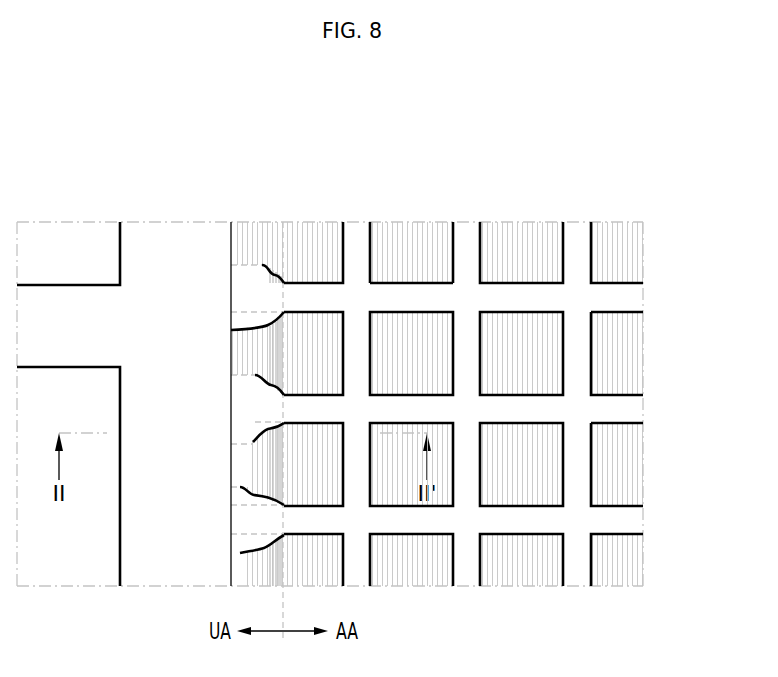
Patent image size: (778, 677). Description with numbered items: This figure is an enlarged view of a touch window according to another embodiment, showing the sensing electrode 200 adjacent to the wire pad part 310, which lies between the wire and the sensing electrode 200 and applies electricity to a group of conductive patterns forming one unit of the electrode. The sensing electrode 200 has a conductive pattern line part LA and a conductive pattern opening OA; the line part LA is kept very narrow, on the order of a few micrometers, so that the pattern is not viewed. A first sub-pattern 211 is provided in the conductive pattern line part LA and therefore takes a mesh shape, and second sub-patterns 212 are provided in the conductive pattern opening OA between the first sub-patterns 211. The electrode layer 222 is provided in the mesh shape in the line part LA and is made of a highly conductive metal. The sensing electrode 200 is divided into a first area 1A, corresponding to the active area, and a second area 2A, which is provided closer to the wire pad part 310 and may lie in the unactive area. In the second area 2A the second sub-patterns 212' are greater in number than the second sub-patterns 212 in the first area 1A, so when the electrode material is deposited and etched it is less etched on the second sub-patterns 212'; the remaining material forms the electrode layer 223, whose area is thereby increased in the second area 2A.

The wire pad part 310 is at (174, 232).
The sensing electrode 200 is at (487, 122).
The electrode layer 223 is at (266, 292).
The electrode layer 222 is at (428, 298).
The first sub-pattern 211 is at (521, 404).
The second sub-pattern 212 is at (407, 227).
The second sub-pattern 212' is at (303, 379).
The first area 1A is at (403, 233).
The second area 2A is at (242, 266).
The conductive pattern line part LA is at (522, 296).
The conductive pattern opening OA is at (530, 349).